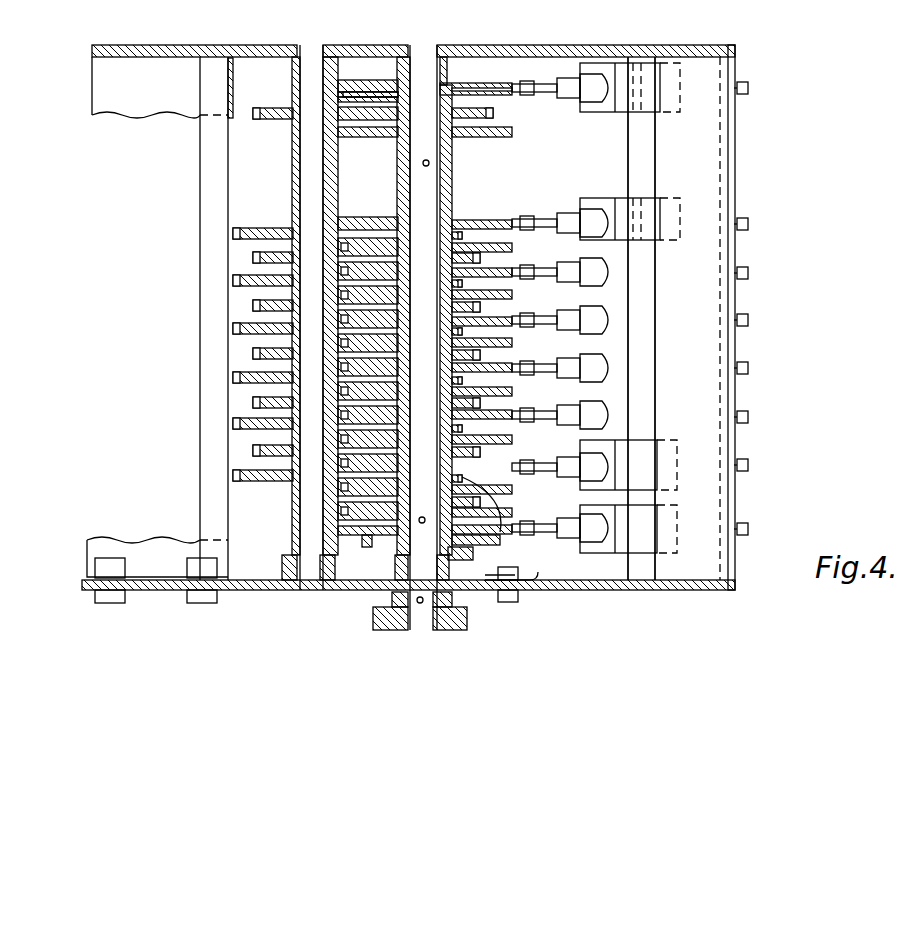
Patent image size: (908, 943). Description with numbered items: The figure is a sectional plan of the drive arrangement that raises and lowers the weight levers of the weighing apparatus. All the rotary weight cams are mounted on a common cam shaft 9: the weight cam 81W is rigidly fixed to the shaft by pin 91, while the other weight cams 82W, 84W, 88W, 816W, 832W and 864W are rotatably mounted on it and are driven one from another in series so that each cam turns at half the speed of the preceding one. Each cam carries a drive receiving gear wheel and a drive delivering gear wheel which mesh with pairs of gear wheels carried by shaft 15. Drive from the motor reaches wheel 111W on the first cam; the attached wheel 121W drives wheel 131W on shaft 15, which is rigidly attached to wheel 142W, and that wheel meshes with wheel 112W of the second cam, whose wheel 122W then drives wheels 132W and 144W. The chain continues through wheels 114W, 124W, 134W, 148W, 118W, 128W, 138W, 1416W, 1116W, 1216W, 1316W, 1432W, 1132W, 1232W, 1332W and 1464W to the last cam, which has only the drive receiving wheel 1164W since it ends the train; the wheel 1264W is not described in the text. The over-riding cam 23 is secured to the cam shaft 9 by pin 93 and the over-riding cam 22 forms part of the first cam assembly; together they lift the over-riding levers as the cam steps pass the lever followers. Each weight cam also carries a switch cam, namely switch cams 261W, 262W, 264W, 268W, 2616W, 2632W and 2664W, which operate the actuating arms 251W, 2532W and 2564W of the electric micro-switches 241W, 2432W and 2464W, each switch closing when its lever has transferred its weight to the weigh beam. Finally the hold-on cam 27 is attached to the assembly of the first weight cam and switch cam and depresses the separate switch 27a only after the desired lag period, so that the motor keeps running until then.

The shaft 15 is at (310, 65).
The cam shaft 9 is at (425, 70).
The pin 91 is at (423, 523).
The pin 93 is at (422, 163).
The over-riding cam 22 is at (337, 510).
The over-riding cam 23 is at (347, 133).
The hold-on cam 27 is at (337, 527).
The switch 27a is at (620, 543).
The rotary weight cam 864W is at (347, 95).
The rotary weight cam 832W is at (355, 219).
The rotary weight cam 816W is at (337, 292).
The rotary weight cam 88W is at (337, 342).
The rotary weight cam 84W is at (337, 390).
The rotary weight cam 82W is at (337, 438).
The rotary weight cam 81W is at (337, 488).
The gear wheel 1464W is at (250, 119).
The gear wheel 1332W is at (230, 227).
The gear wheel 1432W is at (264, 251).
The gear wheel 1316W is at (250, 273).
The gear wheel 1416W is at (253, 303).
The gear wheel 138W is at (233, 327).
The gear wheel 148W is at (253, 355).
The gear wheel 134W is at (233, 377).
The gear wheel 144W is at (253, 402).
The gear wheel 132W is at (233, 423).
The gear wheel 142W is at (253, 452).
The gear wheel 131W is at (233, 478).
The gear wheel 111W is at (366, 540).
The gear wheel 1164W is at (482, 120).
The gear wheel 1264W is at (476, 110).
The gear wheel 1232W is at (472, 227).
The gear wheel 1132W is at (480, 262).
The gear wheel 1216W is at (512, 282).
The gear wheel 1116W is at (480, 310).
The gear wheel 128W is at (512, 330).
The gear wheel 118W is at (480, 358).
The gear wheel 124W is at (512, 378).
The gear wheel 114W is at (480, 405).
The gear wheel 122W is at (512, 425).
The gear wheel 112W is at (478, 453).
The gear wheel 121W is at (510, 522).
The switch cam 2664W is at (507, 103).
The actuating arm 2564W is at (567, 92).
The electric micro-switch 2464W is at (647, 99).
The switch cam 2632W is at (507, 223).
The actuating arm 2532W is at (570, 225).
The electric micro-switch 2432W is at (648, 223).
The switch cam 2616W is at (540, 272).
The switch cam 268W is at (540, 320).
The switch cam 264W is at (540, 368).
The switch cam 262W is at (540, 415).
The switch cam 261W is at (505, 472).
The actuating arm 251W is at (608, 470).
The electric micro-switch 241W is at (650, 470).